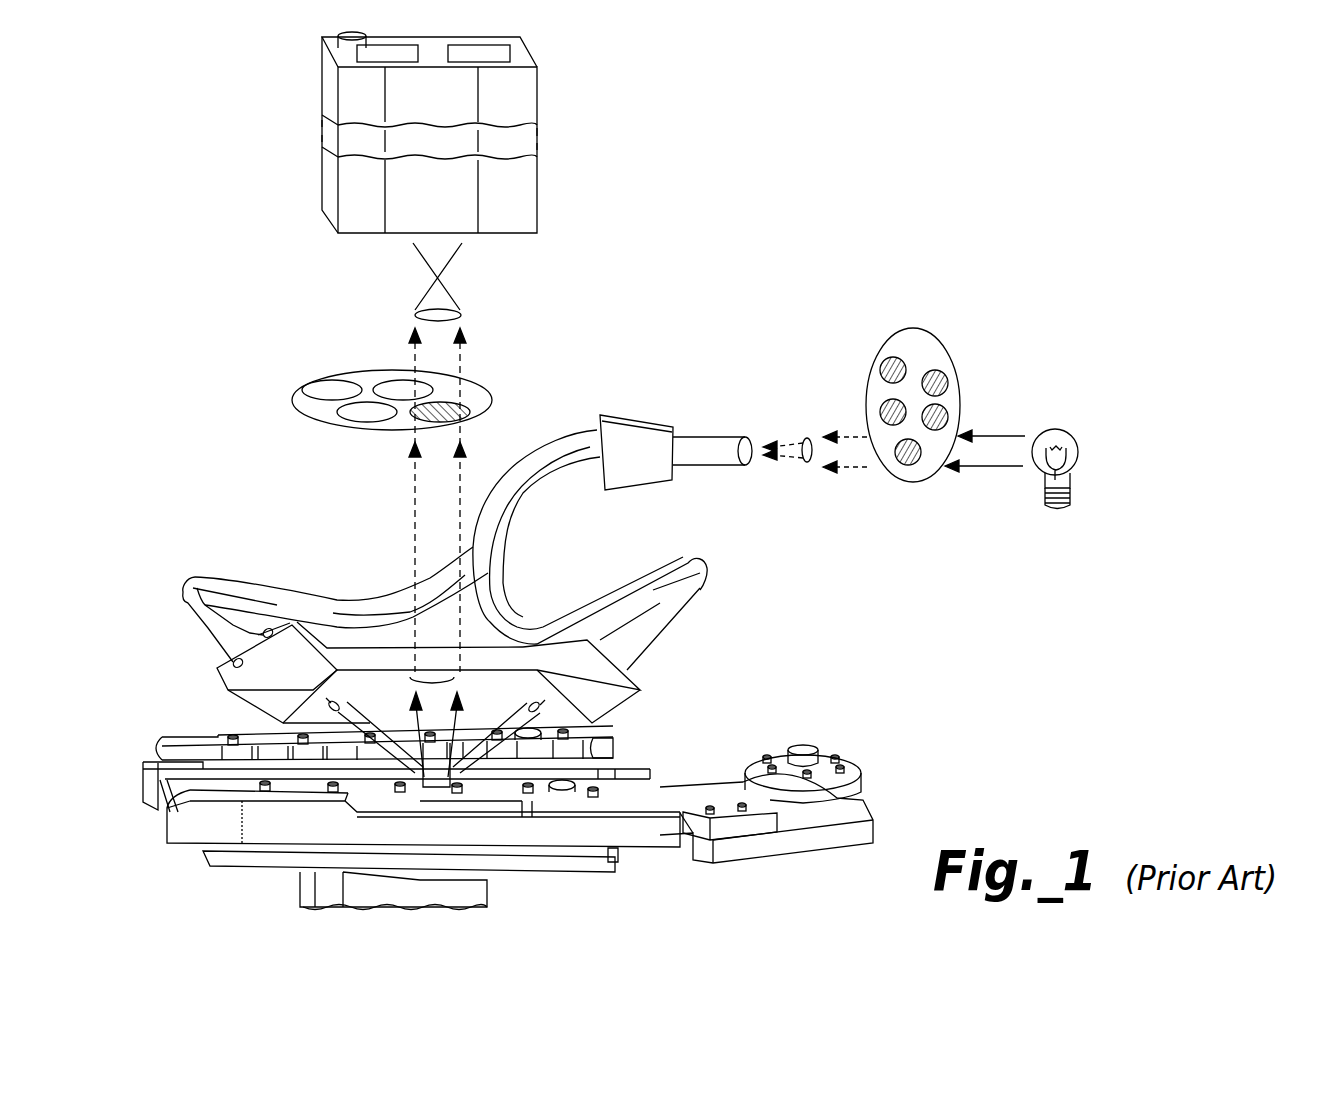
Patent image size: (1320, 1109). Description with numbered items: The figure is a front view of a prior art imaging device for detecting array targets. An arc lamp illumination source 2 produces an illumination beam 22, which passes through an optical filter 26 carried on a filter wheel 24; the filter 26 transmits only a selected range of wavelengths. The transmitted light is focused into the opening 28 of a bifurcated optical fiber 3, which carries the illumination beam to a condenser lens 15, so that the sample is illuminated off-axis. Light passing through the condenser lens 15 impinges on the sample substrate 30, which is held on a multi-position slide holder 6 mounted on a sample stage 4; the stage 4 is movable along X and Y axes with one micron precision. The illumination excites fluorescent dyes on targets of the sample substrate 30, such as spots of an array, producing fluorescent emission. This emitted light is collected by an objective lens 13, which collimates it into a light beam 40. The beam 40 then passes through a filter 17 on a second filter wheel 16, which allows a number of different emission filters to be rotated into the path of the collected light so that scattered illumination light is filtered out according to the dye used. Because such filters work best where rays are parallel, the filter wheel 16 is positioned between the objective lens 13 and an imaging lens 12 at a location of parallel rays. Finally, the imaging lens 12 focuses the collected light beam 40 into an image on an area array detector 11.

The arc lamp illumination source 2 is at (1080, 462).
The bifurcated optical fiber 3 is at (592, 438).
The sample stage 4 is at (203, 853).
The multi-position slide holder 6 is at (160, 745).
The area array detector 11 is at (537, 103).
The imaging lens 12 is at (415, 316).
The objective lens 13 is at (405, 683).
The condenser lens 15 is at (567, 731).
The filter wheel 16 is at (379, 405).
The filter 17 is at (477, 415).
The illumination beam 22 is at (997, 435).
The filter wheel 24 is at (913, 403).
The optical filter 26 is at (907, 470).
The opening 28 is at (747, 432).
The sample substrate 30 is at (593, 762).
The light beam 40 is at (448, 290).